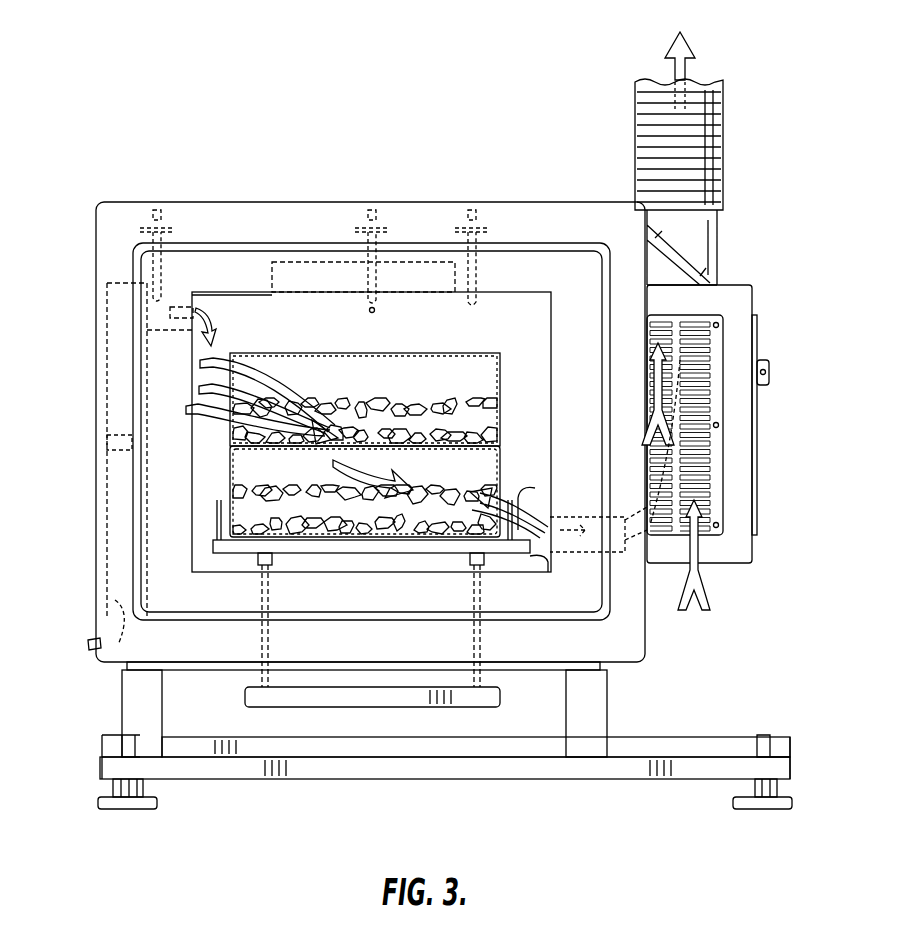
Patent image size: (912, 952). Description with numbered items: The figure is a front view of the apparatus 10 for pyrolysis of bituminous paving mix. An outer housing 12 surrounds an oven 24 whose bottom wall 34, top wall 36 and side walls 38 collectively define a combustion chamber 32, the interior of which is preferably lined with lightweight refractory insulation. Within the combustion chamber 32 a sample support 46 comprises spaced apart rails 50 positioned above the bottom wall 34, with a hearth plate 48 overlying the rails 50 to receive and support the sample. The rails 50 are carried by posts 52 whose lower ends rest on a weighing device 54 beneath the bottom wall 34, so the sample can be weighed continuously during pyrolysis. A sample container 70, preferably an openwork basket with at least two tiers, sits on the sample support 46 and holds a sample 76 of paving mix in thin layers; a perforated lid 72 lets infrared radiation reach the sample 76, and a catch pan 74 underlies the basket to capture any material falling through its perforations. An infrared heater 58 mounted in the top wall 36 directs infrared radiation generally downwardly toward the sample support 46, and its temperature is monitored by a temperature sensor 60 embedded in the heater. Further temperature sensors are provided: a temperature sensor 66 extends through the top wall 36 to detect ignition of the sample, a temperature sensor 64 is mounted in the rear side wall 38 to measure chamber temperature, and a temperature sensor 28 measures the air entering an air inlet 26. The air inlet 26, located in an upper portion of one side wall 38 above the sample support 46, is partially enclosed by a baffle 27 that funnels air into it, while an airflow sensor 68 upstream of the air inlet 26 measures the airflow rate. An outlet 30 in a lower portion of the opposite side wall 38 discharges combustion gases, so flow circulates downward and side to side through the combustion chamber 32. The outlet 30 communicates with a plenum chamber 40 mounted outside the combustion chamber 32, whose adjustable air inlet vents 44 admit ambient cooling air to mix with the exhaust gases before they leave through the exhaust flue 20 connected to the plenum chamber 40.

The apparatus 10 is at (165, 84).
The outer housing 12 is at (217, 202).
The exhaust flue 20 is at (724, 117).
The oven 24 is at (580, 243).
The air inlet 26 is at (147, 311).
The baffle 27 is at (107, 285).
The temperature sensor 28 is at (155, 205).
The outlet 30 is at (625, 552).
The combustion chamber 32 is at (511, 300).
The bottom wall 34 is at (535, 562).
The top wall 36 is at (255, 292).
The side walls 38 is at (195, 462).
The plenum chamber 40 is at (752, 296).
The air inlet vents 44 is at (725, 497).
The sample support 46 is at (205, 560).
The hearth plate 48 is at (214, 545).
The rails 50 is at (258, 558).
The posts 52 is at (262, 598).
The weighing device 54 is at (246, 697).
The infrared heater 58 is at (316, 260).
The temperature sensor 60 is at (373, 205).
The temperature sensor 64 is at (374, 307).
The temperature sensor 66 is at (470, 206).
The airflow sensor 68 is at (107, 443).
The sample container 70 is at (212, 364).
The perforated lid 72 is at (205, 338).
The catch pan 74 is at (216, 511).
The sample 76 is at (235, 425).